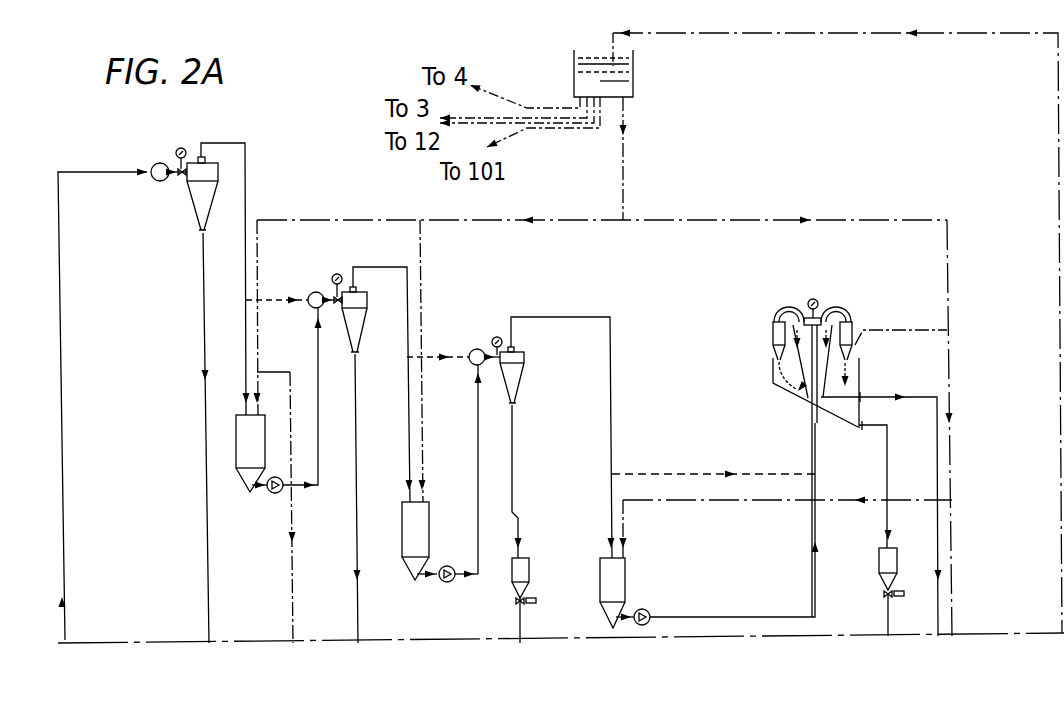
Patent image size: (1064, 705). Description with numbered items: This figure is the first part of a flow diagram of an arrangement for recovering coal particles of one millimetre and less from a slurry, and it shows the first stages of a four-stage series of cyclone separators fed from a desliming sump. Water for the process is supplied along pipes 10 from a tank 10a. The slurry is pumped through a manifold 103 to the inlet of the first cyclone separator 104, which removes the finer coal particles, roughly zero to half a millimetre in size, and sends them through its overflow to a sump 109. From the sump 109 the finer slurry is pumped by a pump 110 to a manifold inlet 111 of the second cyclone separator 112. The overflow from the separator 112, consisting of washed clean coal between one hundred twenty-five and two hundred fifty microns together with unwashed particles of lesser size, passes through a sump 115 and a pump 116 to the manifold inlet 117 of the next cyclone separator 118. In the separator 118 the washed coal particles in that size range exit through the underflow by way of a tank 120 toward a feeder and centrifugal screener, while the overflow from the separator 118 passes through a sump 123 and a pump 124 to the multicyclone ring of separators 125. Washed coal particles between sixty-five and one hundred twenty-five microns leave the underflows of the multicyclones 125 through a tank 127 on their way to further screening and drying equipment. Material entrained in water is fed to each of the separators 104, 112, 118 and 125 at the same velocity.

The pipes 10 is at (678, 222).
The tank 10a is at (629, 79).
The manifold 103 is at (153, 165).
The cyclone separator 104 is at (199, 196).
The sump 109 is at (245, 441).
The pump 110 is at (271, 494).
The manifold inlet 111 is at (311, 291).
The cyclone separator 112 is at (356, 330).
The sump 115 is at (418, 525).
The pump 116 is at (447, 583).
The manifold inlet 117 is at (470, 350).
The cyclone separator 118 is at (518, 382).
The tank 120 is at (524, 568).
The sump 123 is at (620, 572).
The pump 124 is at (647, 611).
The multicyclone ring of separators 125 is at (766, 367).
The tank 127 is at (880, 561).